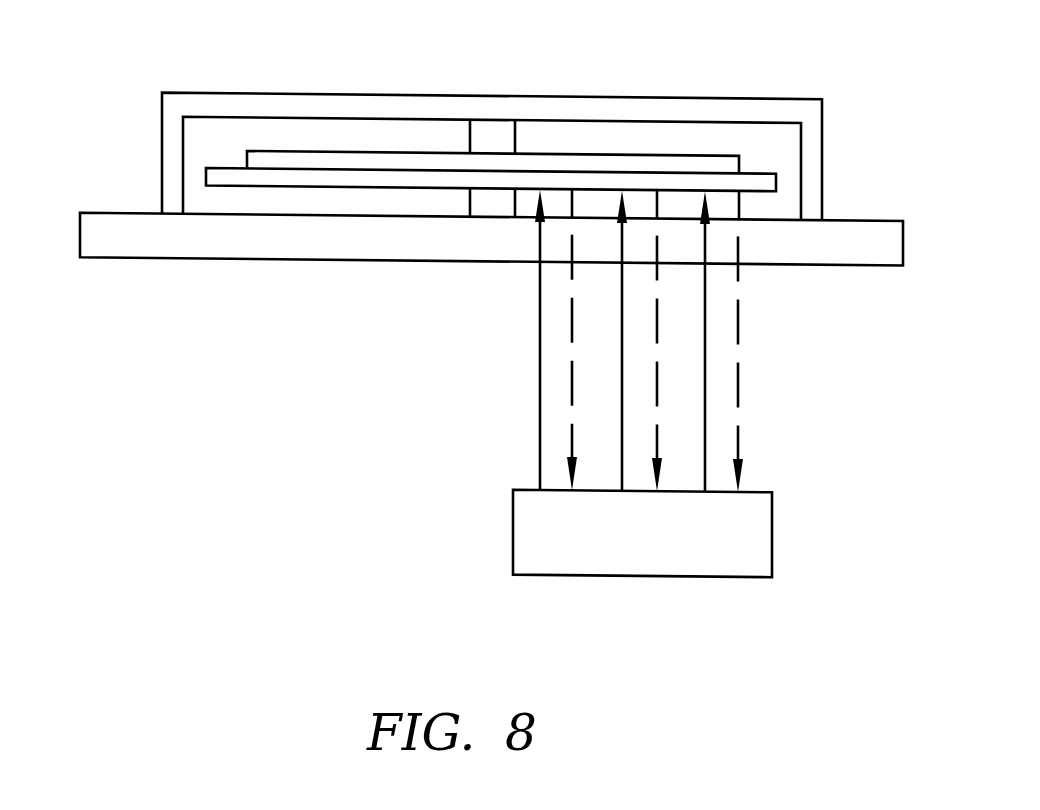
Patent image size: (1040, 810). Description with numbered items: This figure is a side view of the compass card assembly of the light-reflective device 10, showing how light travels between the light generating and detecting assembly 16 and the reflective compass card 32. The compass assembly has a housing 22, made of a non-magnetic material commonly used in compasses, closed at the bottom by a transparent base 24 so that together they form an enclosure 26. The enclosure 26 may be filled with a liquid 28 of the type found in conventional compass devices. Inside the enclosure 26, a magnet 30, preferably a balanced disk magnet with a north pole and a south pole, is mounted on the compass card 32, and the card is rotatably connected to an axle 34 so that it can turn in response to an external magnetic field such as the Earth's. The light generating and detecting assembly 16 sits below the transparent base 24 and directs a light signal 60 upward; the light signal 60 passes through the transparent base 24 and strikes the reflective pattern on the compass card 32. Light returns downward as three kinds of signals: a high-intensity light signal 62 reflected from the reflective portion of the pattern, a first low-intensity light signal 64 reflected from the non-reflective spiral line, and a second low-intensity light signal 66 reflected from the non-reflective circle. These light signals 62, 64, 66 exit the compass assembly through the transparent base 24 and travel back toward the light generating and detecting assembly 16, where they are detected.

The light-reflective device 10 is at (262, 305).
The light generating and detecting assembly 16 is at (558, 555).
The housing 22 is at (825, 165).
The transparent base 24 is at (905, 255).
The enclosure 26 is at (408, 140).
The liquid 28 is at (695, 107).
The magnet 30 is at (263, 158).
The compass card 32 is at (230, 178).
The axle 34 is at (493, 135).
The light signal 60 is at (538, 362).
The high-intensity light signal 62 is at (657, 400).
The first low-intensity light signal 64 is at (740, 325).
The second low-intensity light signal 66 is at (572, 323).